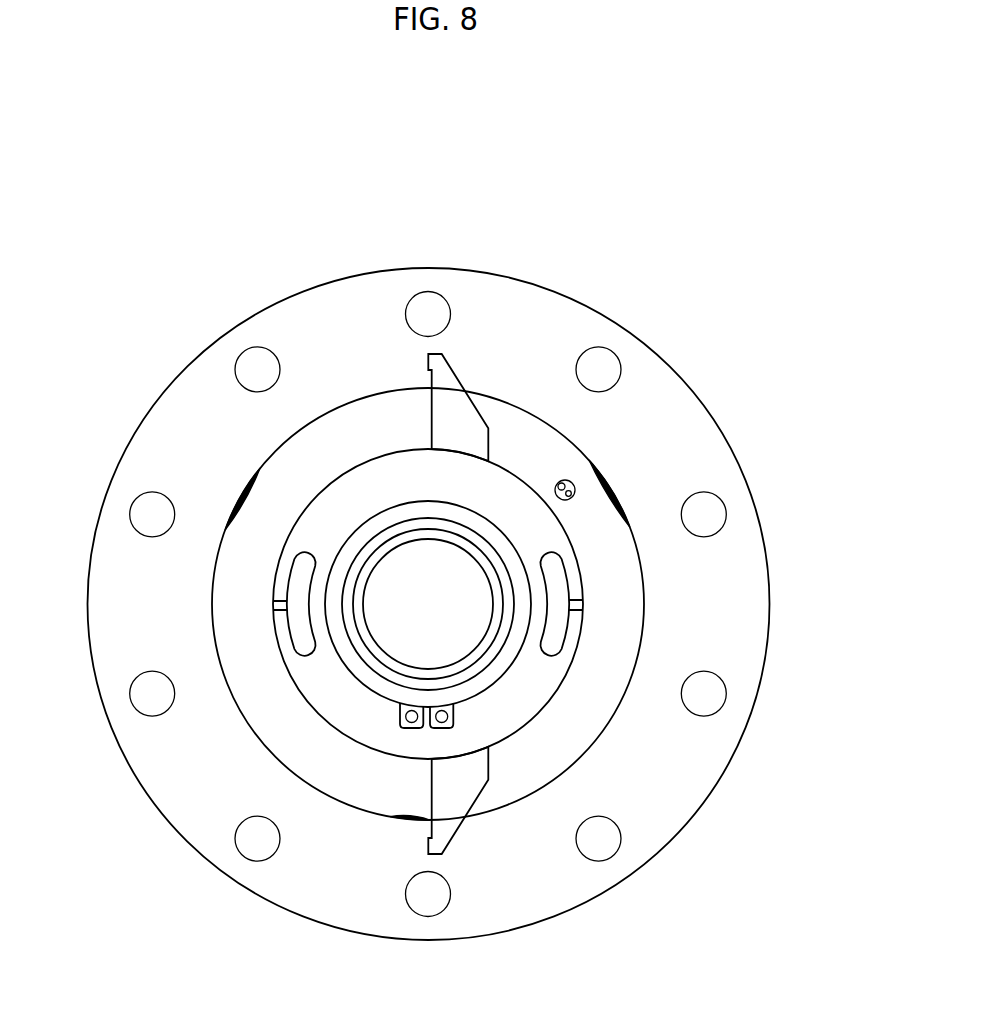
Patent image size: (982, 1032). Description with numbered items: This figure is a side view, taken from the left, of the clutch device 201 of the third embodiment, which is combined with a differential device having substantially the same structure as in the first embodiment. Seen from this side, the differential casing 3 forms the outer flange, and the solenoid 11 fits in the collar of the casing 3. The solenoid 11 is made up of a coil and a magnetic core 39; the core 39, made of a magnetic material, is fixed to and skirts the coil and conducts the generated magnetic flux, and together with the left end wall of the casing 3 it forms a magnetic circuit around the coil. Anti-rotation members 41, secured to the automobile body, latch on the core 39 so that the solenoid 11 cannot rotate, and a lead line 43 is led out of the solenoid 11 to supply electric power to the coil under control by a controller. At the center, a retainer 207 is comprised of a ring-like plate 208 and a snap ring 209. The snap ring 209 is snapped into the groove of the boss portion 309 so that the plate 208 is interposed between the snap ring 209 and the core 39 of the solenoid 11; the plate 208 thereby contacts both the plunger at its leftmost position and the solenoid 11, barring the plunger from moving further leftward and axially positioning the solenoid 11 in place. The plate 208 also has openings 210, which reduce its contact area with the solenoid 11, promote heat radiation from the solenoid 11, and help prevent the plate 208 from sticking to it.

The clutch device 201 is at (437, 185).
The differential casing 3 is at (340, 275).
The solenoid 11 is at (645, 626).
The magnetic core 39 is at (590, 705).
The anti-rotation members 41 is at (452, 378).
The lead line 43 is at (574, 483).
The retainer 207 is at (550, 523).
The ring-like plate 208 is at (497, 483).
The snap ring 209 is at (371, 702).
The openings 210 is at (297, 563).
The boss portion 309 is at (510, 602).